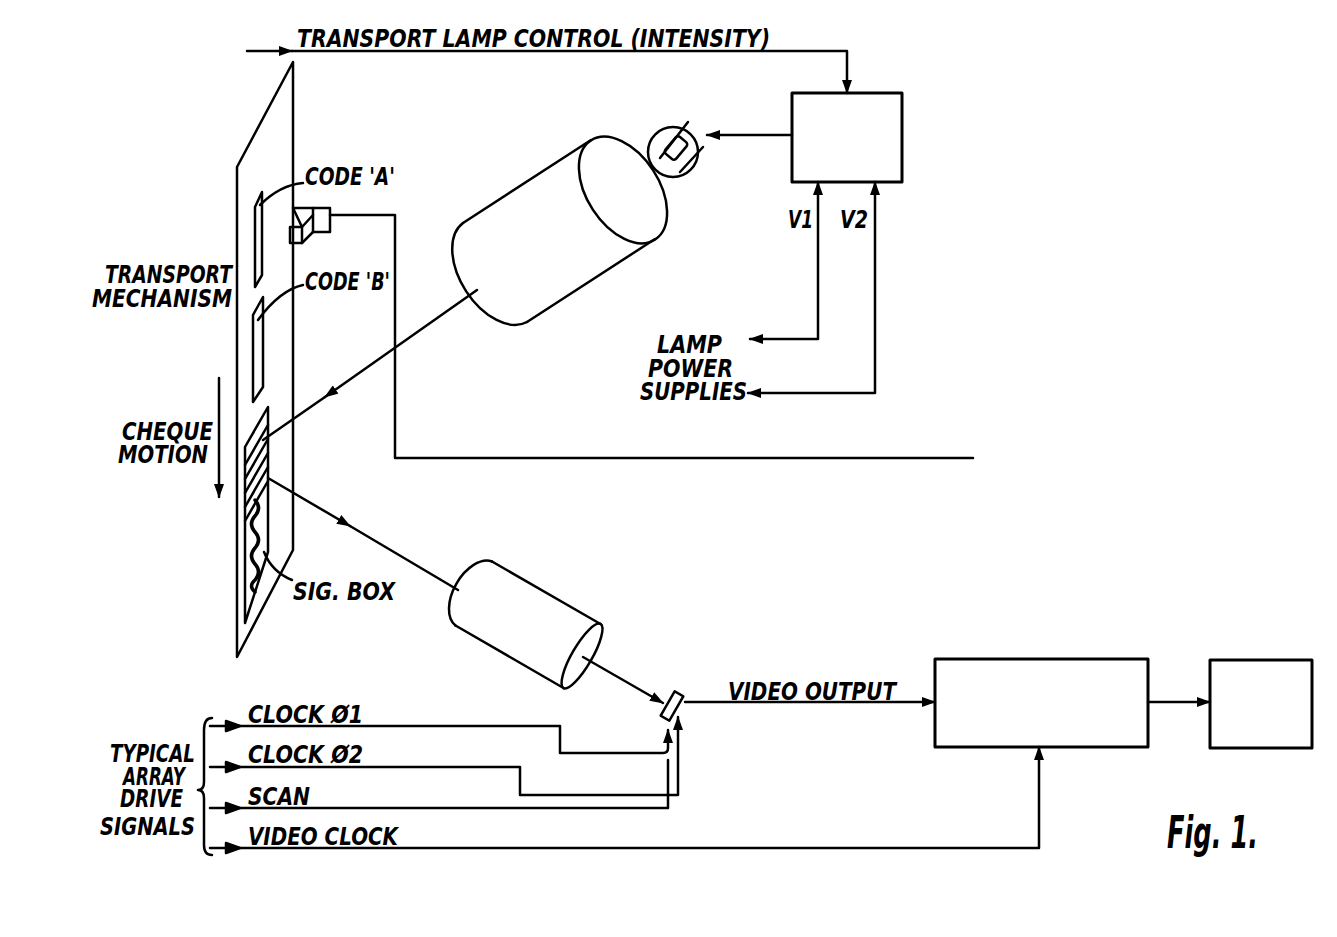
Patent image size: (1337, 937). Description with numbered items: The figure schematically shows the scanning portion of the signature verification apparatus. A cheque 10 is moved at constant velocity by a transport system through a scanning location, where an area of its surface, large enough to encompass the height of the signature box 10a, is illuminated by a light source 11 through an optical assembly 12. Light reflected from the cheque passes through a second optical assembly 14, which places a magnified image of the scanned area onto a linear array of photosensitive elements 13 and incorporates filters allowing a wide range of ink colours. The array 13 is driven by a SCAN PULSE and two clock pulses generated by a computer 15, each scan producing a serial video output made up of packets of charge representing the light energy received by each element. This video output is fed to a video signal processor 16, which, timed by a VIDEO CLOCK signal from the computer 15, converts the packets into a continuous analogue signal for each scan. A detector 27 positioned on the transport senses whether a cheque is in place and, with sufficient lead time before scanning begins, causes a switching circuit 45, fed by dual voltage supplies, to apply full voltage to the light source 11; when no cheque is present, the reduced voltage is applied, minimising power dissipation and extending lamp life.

The cheque 10 is at (257, 160).
The signature box 10a is at (252, 600).
The light source 11 is at (687, 176).
The optical assembly 12 is at (545, 172).
The linear array of photosensitive elements 13 is at (678, 690).
The optical assembly 14 is at (555, 600).
The computer 15 is at (1218, 672).
The video signal processor 16 is at (942, 670).
The detector 27 is at (333, 212).
The switching circuit 45 is at (895, 120).